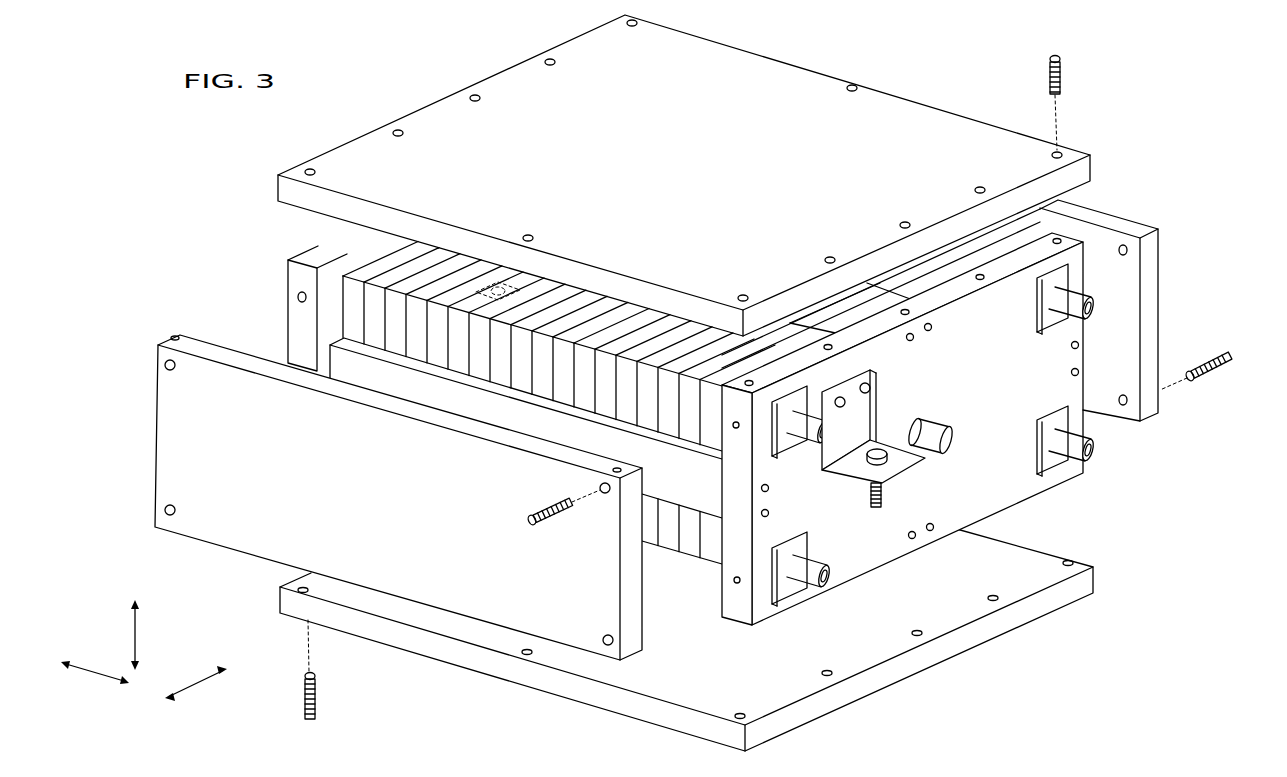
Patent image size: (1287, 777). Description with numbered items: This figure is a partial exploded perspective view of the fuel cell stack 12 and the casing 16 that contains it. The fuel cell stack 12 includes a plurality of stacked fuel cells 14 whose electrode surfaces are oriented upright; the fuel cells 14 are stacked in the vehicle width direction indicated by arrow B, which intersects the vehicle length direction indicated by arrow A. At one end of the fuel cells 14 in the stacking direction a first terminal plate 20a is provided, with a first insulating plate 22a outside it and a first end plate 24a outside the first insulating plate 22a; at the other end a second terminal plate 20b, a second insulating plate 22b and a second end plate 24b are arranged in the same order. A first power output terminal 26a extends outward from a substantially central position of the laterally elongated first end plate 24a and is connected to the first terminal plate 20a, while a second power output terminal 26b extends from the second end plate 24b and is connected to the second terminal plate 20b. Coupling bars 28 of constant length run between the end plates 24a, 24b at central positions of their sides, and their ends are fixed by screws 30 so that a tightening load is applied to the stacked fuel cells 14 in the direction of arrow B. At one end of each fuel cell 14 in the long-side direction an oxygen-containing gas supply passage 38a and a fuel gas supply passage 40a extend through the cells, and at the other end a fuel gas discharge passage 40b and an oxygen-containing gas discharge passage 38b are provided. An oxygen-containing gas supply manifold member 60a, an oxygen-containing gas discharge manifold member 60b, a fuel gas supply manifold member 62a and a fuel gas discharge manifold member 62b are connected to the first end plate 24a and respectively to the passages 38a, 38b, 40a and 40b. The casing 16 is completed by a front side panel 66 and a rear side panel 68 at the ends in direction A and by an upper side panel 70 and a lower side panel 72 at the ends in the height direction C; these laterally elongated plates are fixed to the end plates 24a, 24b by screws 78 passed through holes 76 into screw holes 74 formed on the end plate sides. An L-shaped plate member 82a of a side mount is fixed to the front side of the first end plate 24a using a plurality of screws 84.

The fuel cell stack 12 is at (470, 52).
The fuel cells 14 is at (550, 370).
The casing 16 is at (703, 358).
The first terminal plate 20a is at (697, 388).
The second terminal plate 20b is at (373, 333).
The first insulating plate 22a is at (720, 380).
The second insulating plate 22b is at (352, 338).
The first end plate 24a is at (995, 310).
The second end plate 24b is at (286, 258).
The first power output terminal 26a is at (933, 423).
The second power output terminal 26b is at (508, 282).
The coupling bars 28 is at (532, 428).
The screws 30 is at (770, 510).
The oxygen-containing gas supply passage 38a is at (1097, 305).
The oxygen-containing gas discharge passage 38b is at (822, 588).
The fuel gas supply passage 40a is at (1067, 476).
The fuel gas discharge passage 40b is at (790, 410).
The oxygen-containing gas supply manifold member 60a is at (1136, 299).
The oxygen-containing gas discharge manifold member 60b is at (826, 592).
The fuel gas supply manifold member 62a is at (1073, 475).
The fuel gas discharge manifold member 62b is at (790, 344).
The front side panel 66 is at (222, 377).
The rear side panel 68 is at (1148, 280).
The upper side panel 70 is at (703, 358).
The lower side panel 72 is at (1022, 612).
The screw holes 74 is at (737, 430).
The holes 76 is at (1063, 153).
The screws 78 is at (1063, 82).
The plate member 82a is at (873, 451).
The screws 84 is at (873, 385).